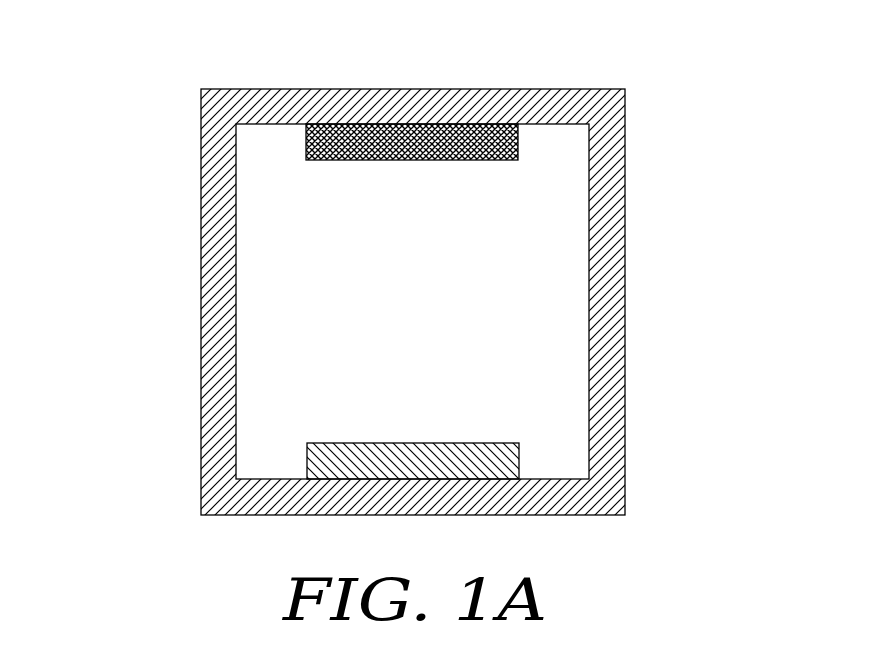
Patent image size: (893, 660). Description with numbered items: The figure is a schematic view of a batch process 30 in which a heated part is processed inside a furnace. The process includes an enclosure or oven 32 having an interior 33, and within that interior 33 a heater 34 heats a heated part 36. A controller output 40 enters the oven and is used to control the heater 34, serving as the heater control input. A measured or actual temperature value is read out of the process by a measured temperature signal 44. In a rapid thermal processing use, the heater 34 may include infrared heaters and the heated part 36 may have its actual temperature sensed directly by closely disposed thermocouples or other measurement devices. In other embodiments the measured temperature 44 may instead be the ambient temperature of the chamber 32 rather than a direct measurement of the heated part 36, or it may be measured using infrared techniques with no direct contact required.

The batch process 30 is at (484, 285).
The enclosure or oven 32 is at (607, 353).
The interior 33 is at (553, 249).
The heater 34 is at (518, 142).
The heated part 36 is at (307, 455).
The controller output 40 is at (300, 144).
The measured temperature signal 44 is at (519, 460).